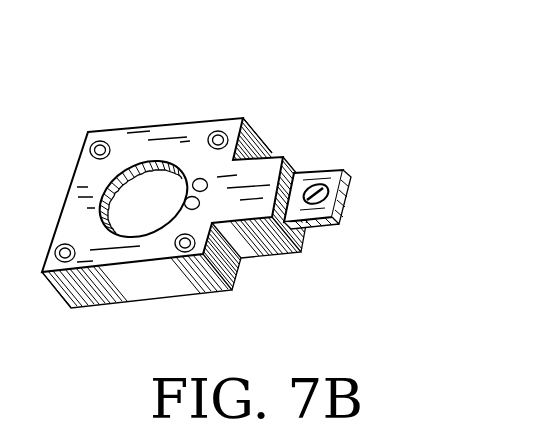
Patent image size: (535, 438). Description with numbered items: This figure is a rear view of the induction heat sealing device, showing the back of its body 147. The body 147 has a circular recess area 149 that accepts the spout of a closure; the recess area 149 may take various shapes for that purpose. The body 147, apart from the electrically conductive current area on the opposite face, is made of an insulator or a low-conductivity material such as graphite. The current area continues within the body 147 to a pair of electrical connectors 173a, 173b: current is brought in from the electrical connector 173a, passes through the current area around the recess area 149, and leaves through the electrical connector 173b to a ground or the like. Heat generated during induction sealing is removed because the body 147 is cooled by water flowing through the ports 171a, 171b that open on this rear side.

The body 147 is at (136, 145).
The recess area 149 is at (137, 222).
The port 171a is at (200, 202).
The port 171b is at (207, 180).
The electrical connector 173a is at (350, 173).
The electrical connector 173b is at (347, 205).